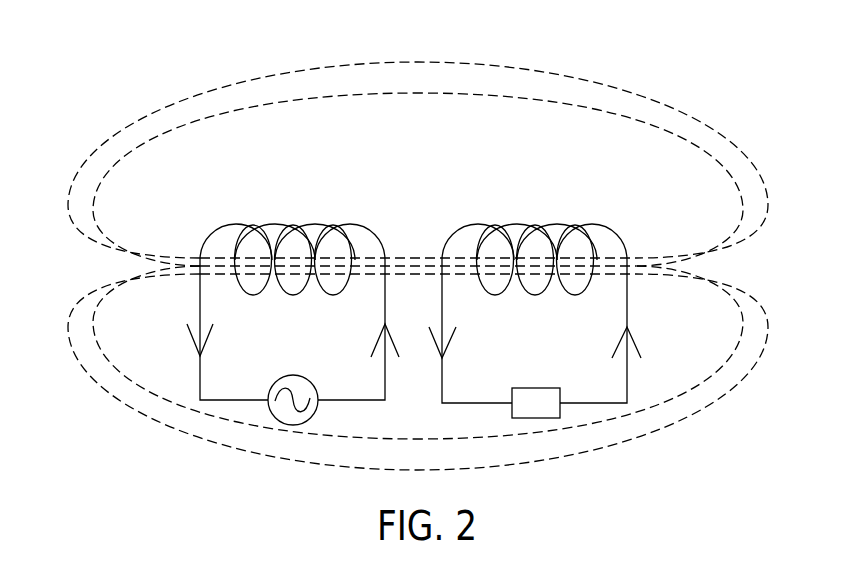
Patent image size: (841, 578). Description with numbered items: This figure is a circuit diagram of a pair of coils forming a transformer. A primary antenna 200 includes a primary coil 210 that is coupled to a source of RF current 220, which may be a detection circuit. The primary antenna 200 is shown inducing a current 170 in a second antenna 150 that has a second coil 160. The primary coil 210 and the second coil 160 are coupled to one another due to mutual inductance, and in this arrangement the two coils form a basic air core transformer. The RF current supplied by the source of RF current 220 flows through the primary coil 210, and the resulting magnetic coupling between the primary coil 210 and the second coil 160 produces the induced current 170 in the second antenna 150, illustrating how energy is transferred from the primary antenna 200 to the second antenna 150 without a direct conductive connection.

The second antenna 150 is at (611, 330).
The second coil 160 is at (585, 245).
The current 170 is at (572, 403).
The primary antenna 200 is at (248, 325).
The primary coil 210 is at (347, 245).
The source of RF current 220 is at (270, 408).